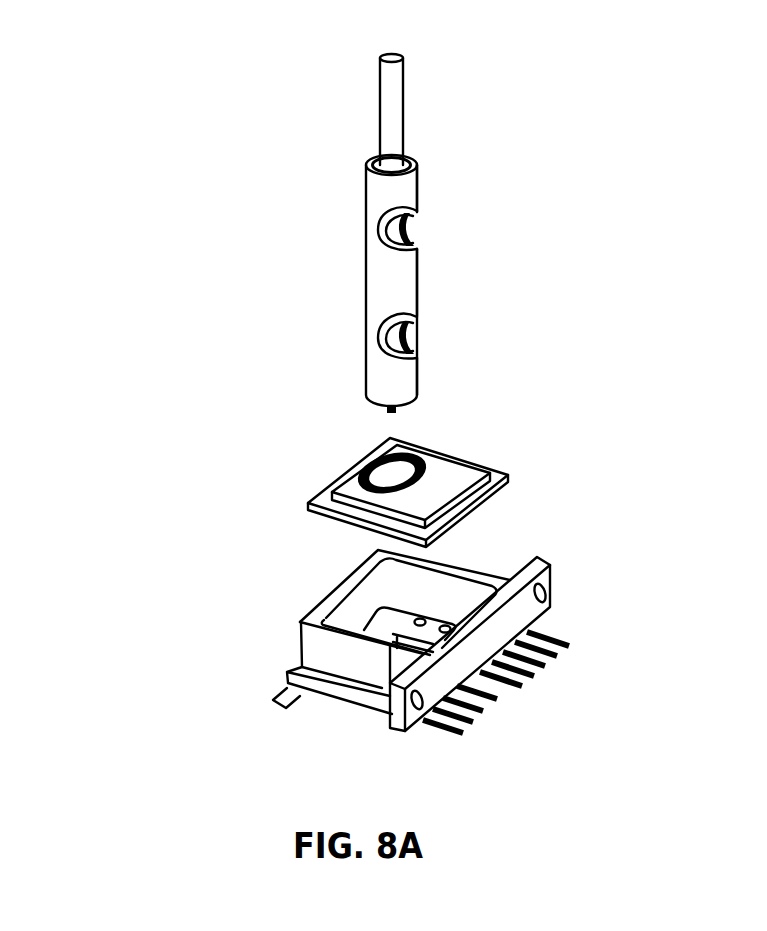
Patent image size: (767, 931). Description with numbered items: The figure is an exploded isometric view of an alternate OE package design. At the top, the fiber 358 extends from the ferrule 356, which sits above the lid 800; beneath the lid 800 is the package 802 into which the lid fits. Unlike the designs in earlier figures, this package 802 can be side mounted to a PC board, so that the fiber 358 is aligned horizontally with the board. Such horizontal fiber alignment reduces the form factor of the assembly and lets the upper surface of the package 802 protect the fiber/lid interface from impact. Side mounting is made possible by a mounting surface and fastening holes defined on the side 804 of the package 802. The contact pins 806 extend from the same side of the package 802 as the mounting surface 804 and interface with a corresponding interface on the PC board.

The fiber 358 is at (403, 147).
The ferrule 356 is at (417, 233).
The lid 800 is at (355, 492).
The package 802 is at (303, 625).
The side 804 is at (545, 595).
The contact pins 806 is at (540, 665).